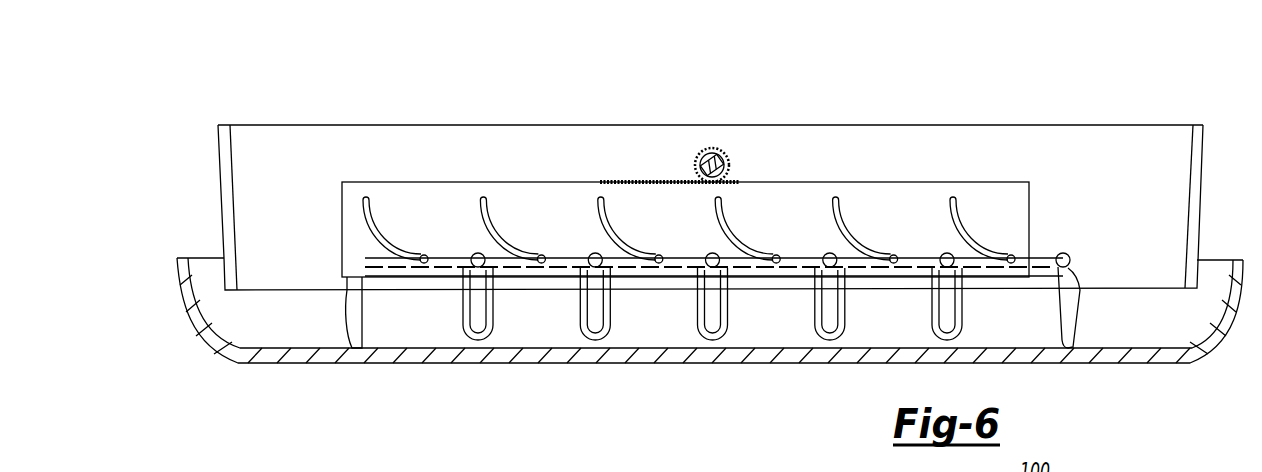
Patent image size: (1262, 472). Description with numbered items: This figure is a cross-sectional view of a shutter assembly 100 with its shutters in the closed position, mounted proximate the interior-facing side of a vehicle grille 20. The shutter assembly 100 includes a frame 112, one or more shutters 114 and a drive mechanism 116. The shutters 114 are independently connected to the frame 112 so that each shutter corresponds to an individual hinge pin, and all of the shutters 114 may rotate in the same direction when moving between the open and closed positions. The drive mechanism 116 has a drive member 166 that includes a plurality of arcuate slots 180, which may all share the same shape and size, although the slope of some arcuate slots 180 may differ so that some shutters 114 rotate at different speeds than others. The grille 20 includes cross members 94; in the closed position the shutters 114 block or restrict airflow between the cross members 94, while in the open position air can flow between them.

The grille 20 is at (1123, 365).
The shutter assembly 100 is at (967, 87).
The frame 112 is at (348, 124).
The drive member 166 is at (422, 180).
The drive mechanism 116 is at (753, 160).
The arcuate slots 180 is at (843, 218).
The shutters 114 is at (907, 257).
The cross members 94 is at (948, 300).